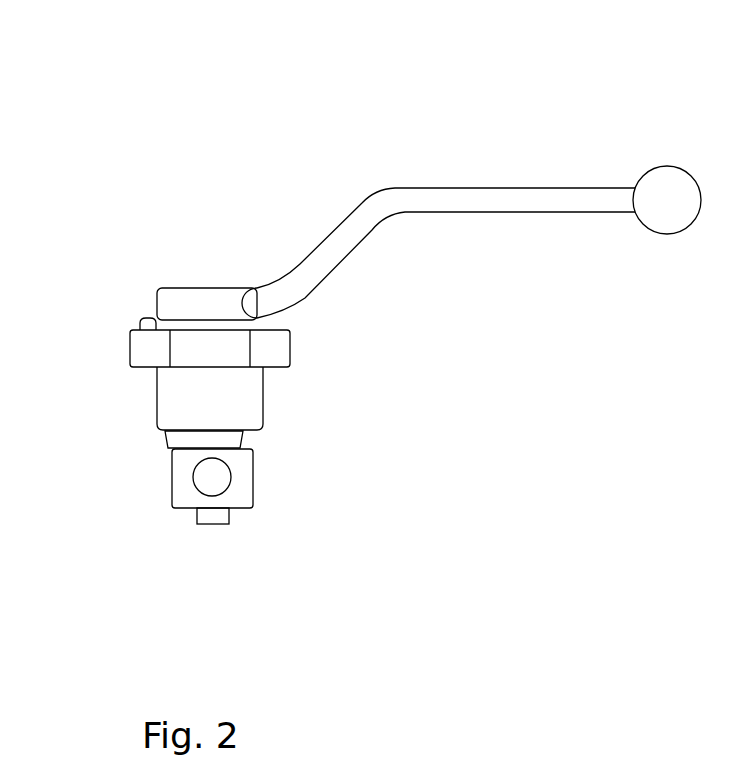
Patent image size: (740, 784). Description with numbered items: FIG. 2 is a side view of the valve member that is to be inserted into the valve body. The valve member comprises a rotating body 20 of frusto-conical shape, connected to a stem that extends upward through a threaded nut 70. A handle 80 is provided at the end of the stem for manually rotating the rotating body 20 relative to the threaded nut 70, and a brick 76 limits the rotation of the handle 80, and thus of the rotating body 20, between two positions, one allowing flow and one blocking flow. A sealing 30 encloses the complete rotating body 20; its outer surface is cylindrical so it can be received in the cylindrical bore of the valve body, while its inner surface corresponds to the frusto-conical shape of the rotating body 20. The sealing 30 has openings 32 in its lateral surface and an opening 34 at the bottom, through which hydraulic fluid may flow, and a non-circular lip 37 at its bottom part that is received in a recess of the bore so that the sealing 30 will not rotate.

The handle 80 is at (487, 203).
The brick 76 is at (153, 317).
The threaded nut 70 is at (150, 353).
The rotating body 20 is at (247, 442).
The sealing 30 is at (243, 490).
The opening 32 is at (205, 483).
The opening 34 is at (212, 524).
The lip 37 is at (225, 513).